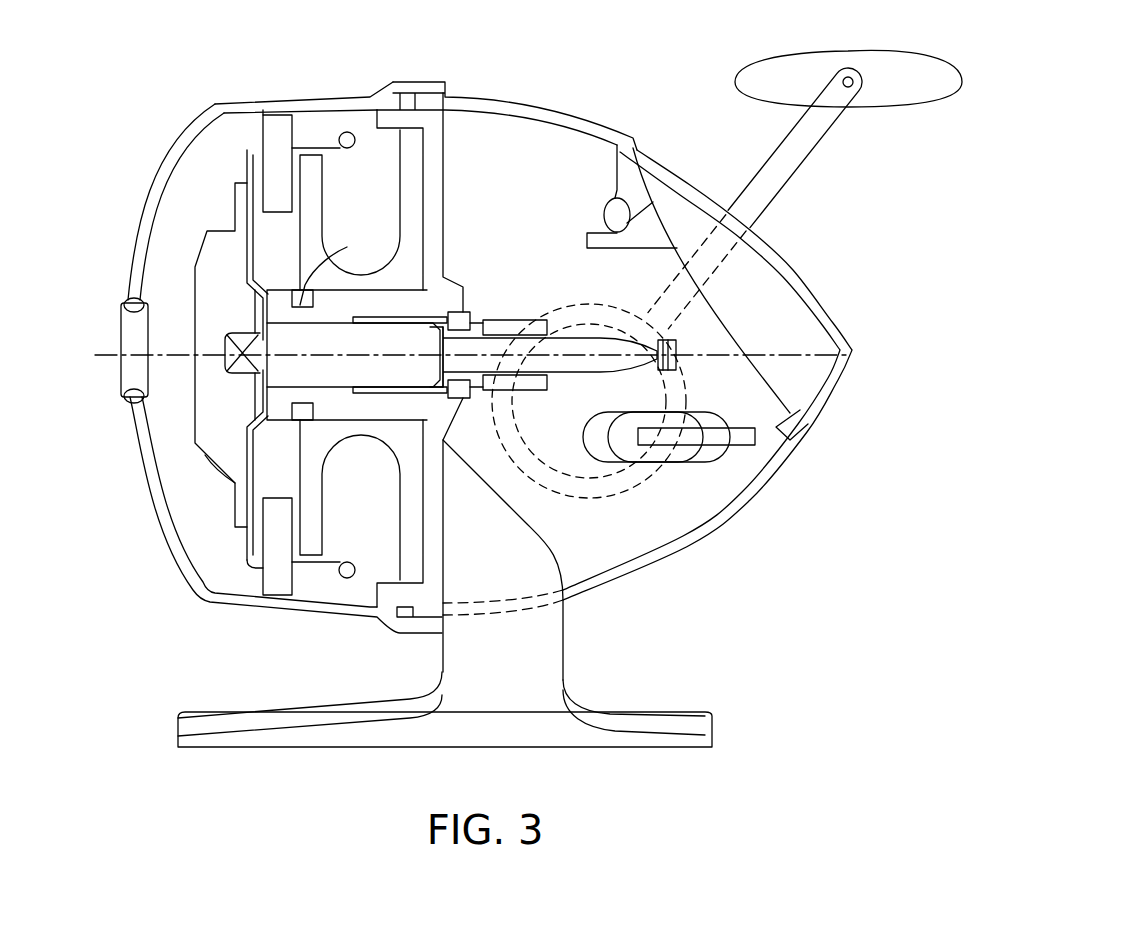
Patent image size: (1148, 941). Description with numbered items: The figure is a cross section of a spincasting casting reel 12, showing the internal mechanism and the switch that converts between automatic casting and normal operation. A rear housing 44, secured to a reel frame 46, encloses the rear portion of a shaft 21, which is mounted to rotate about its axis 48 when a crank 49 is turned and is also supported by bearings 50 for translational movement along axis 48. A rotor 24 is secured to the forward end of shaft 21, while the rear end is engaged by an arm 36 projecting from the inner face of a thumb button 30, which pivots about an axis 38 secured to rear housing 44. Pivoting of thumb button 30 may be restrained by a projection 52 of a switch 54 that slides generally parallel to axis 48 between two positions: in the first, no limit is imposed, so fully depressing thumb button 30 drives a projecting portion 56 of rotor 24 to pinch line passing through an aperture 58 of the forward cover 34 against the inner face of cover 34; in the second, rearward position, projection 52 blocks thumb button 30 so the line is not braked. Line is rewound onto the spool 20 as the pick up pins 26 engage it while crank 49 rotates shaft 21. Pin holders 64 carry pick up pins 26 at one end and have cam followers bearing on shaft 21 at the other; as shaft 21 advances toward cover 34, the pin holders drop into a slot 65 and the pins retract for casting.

The casting reel 12 is at (680, 77).
The spool 20 is at (392, 490).
The shaft 21 is at (590, 337).
The rotor 24 is at (245, 538).
The pick up pins 26 is at (293, 126).
The thumb button 30 is at (806, 279).
The forward cover 34 is at (150, 500).
The arm 36 is at (755, 321).
The axis 38 is at (604, 215).
The rear housing 44 is at (545, 105).
The reel frame 46 is at (487, 677).
The axis 48 is at (470, 357).
The crank 49 is at (808, 160).
The bearings 50 is at (520, 335).
The projection 52 is at (742, 448).
The switch 54 is at (590, 437).
The projecting portion 56 is at (213, 470).
The aperture 58 is at (128, 322).
The pin holders 64 is at (268, 227).
The slot 65 is at (333, 264).